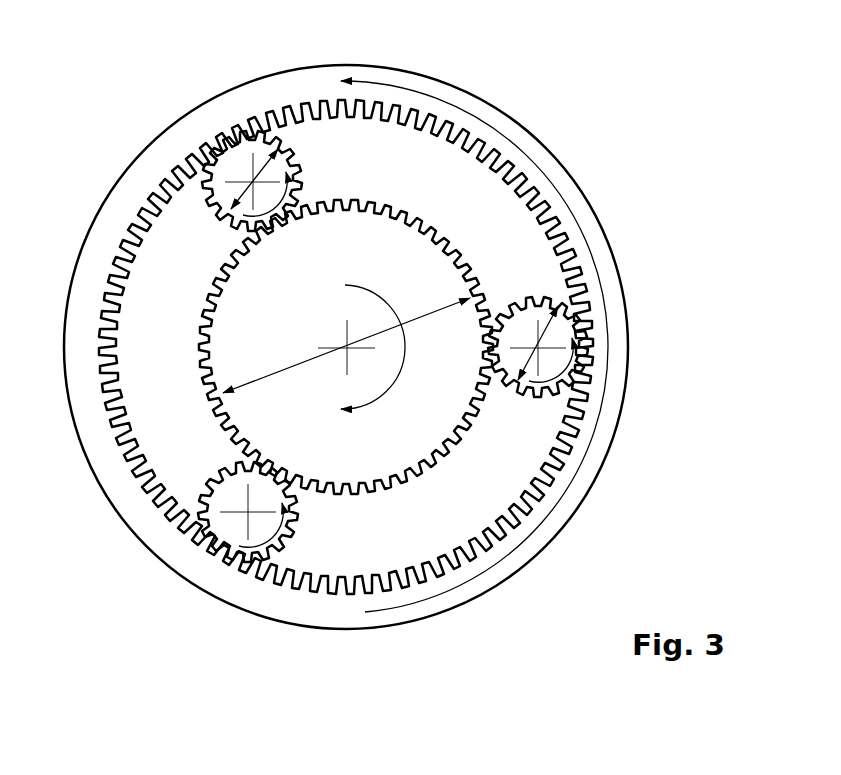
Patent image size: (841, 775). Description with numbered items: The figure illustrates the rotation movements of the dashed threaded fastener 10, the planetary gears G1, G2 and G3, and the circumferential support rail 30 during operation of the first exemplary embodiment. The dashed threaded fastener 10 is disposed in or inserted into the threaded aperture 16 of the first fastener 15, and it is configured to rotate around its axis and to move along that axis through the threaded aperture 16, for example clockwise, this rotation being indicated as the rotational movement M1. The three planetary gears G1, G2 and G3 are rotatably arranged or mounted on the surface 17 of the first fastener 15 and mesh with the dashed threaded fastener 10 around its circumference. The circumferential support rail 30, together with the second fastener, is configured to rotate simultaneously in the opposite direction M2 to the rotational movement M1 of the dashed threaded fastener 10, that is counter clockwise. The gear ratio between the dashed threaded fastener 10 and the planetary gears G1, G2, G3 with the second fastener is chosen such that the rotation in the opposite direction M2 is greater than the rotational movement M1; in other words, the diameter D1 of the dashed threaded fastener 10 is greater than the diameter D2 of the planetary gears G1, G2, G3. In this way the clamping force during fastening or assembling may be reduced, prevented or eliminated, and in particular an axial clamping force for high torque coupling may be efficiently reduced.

The dashed threaded fastener 10 is at (407, 207).
The first fastener 15 is at (477, 203).
The threaded aperture 16 is at (291, 337).
The surface 17 is at (418, 550).
The circumferential support rail 30 is at (155, 160).
The planetary gear G1 is at (215, 188).
The planetary gear G2 is at (222, 520).
The planetary gear G3 is at (565, 310).
The diameter of the dashed threaded fastener D1 is at (293, 372).
The diameter of the planetary gear D2 is at (216, 158).
The rotational movement M1 is at (403, 380).
The opposite direction M2 is at (293, 183).